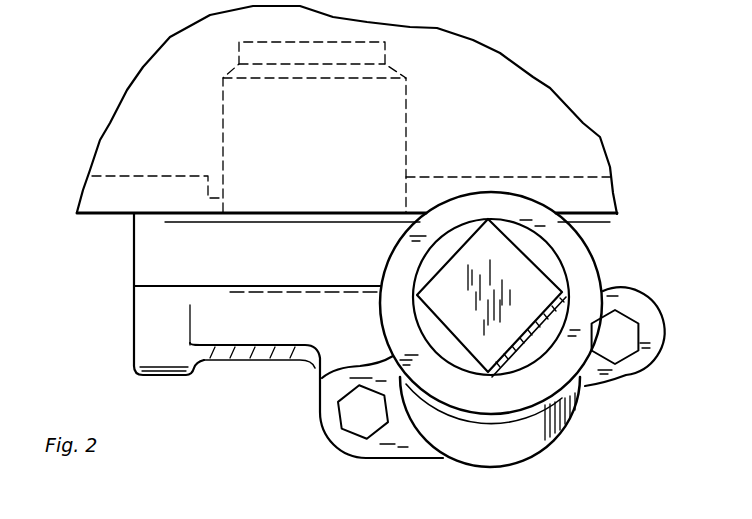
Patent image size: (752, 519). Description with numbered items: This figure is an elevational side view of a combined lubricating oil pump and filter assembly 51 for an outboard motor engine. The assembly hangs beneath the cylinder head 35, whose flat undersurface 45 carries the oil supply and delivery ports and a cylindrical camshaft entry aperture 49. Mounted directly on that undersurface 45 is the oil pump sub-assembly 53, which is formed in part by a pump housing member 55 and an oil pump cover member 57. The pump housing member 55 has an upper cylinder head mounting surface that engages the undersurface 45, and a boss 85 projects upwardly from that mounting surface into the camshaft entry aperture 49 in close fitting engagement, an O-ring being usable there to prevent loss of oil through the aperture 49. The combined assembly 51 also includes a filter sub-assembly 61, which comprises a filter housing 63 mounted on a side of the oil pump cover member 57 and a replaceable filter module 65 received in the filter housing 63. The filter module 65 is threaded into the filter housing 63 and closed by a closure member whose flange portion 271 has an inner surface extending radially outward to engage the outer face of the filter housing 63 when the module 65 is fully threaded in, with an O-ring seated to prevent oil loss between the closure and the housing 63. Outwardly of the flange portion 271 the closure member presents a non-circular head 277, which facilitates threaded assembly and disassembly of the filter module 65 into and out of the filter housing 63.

The cylinder head 35 is at (488, 60).
The boss 85 is at (372, 117).
The camshaft entry aperture 49 is at (208, 173).
The flat undersurface 45 is at (95, 214).
The pump housing member 55 is at (147, 256).
The oil pump sub-assembly 53 is at (163, 298).
The oil pump cover member 57 is at (262, 320).
The combined lubricating oil pump and filter assembly 51 is at (310, 441).
The filter sub-assembly 61 is at (624, 274).
The filter housing 63 is at (548, 420).
The replaceable filter module 65 is at (537, 278).
The non-circular head 277 is at (452, 277).
The flange portion 271 is at (590, 321).